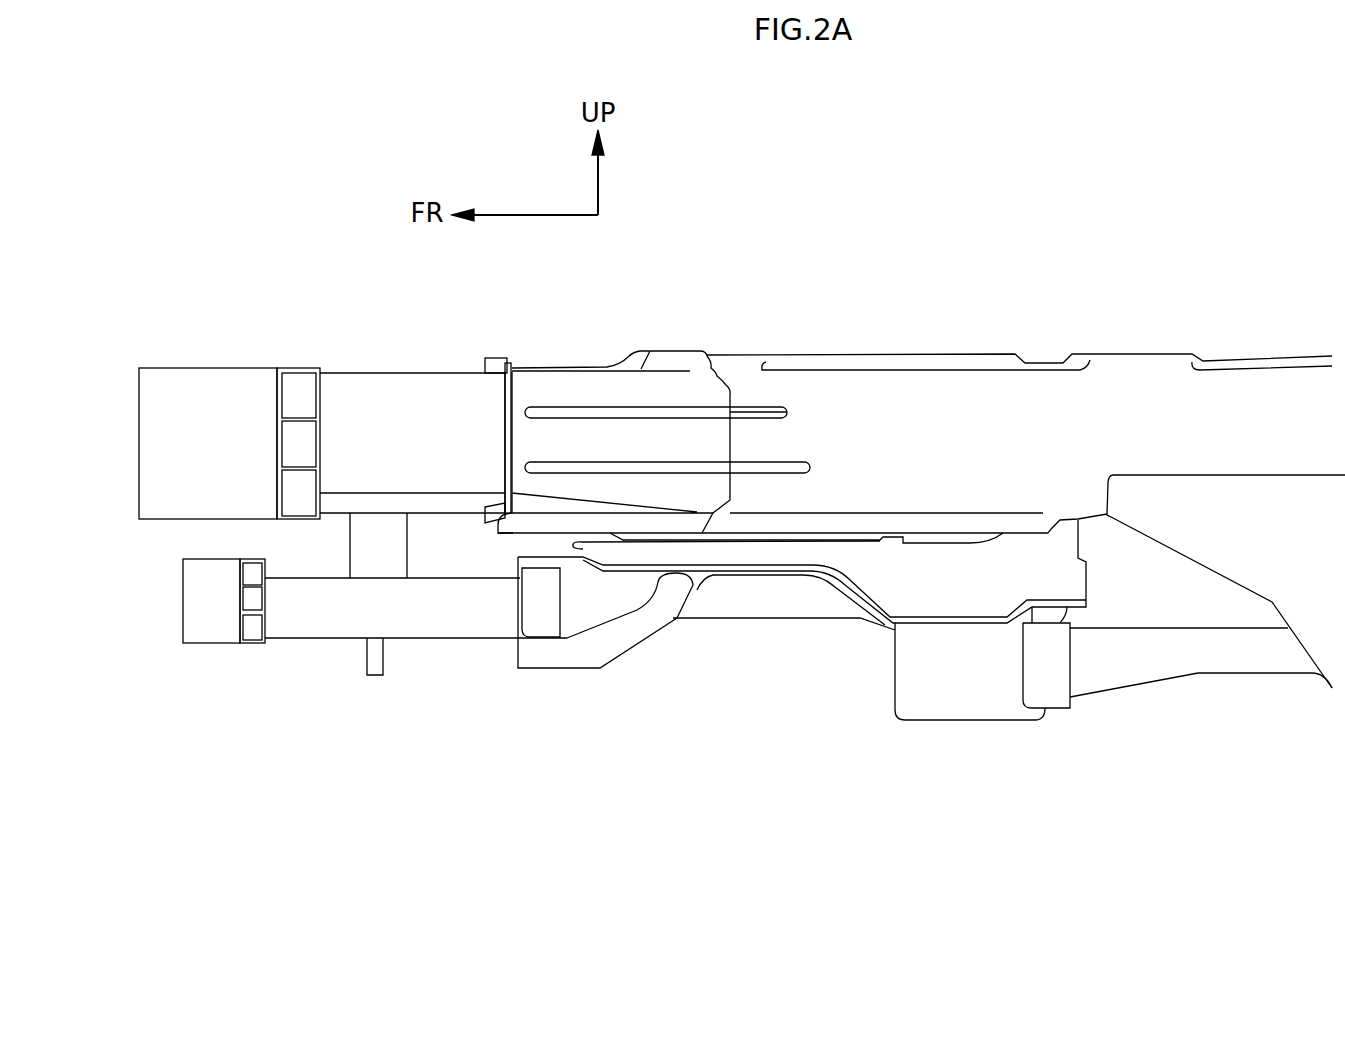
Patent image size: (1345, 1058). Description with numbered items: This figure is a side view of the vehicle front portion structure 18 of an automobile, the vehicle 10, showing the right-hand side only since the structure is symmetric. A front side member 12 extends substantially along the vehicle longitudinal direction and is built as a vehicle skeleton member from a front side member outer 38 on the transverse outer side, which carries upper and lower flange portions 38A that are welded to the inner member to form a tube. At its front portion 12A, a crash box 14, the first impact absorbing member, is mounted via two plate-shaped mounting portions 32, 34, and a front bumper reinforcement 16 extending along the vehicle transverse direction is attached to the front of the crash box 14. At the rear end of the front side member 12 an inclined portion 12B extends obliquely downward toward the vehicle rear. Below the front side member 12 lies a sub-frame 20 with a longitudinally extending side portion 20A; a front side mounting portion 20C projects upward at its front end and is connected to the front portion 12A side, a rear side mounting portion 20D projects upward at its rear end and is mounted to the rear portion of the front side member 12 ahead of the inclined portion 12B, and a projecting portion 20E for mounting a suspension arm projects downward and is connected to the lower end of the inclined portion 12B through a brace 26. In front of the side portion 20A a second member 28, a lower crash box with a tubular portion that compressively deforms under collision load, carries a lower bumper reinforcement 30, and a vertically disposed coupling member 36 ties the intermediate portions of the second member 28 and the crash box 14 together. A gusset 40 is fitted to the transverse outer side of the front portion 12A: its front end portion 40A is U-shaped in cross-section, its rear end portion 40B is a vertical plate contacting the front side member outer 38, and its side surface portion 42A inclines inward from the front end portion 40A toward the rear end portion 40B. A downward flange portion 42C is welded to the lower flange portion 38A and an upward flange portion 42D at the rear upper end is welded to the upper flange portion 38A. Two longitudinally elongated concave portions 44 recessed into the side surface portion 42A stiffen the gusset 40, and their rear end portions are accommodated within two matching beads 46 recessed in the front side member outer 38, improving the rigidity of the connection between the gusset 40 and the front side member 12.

The vehicle 10 is at (383, 301).
The front side member 12 is at (890, 354).
The front portion 12A is at (624, 366).
The inclined portion 12B is at (1252, 562).
The crash box 14 is at (427, 372).
The front bumper reinforcement 16 is at (237, 380).
The vehicle front portion structure 18 is at (645, 349).
The sub-frame 20 is at (745, 619).
The side portion 20A is at (768, 555).
The front side mounting portion 20C is at (548, 543).
The rear side mounting portion 20D is at (1073, 525).
The projecting portion 20E is at (972, 700).
The brace 26 is at (1188, 662).
The second member 28 is at (317, 622).
The lower bumper reinforcement 30 is at (213, 632).
The plate-shaped mounting portion 32 is at (513, 363).
The plate-shaped mounting portion 34 is at (500, 362).
The coupling member 36 is at (367, 547).
The front side member outer 38 is at (933, 421).
The flange portion 38A is at (992, 362).
The gusset 40 is at (732, 413).
The front end portion 40A is at (515, 445).
The rear end portion 40B is at (720, 443).
The side surface portion 42A is at (580, 388).
The flange portion 42C is at (667, 523).
The flange portion 42D is at (675, 360).
The concave portion 44 is at (623, 413).
The bead 46 is at (763, 412).